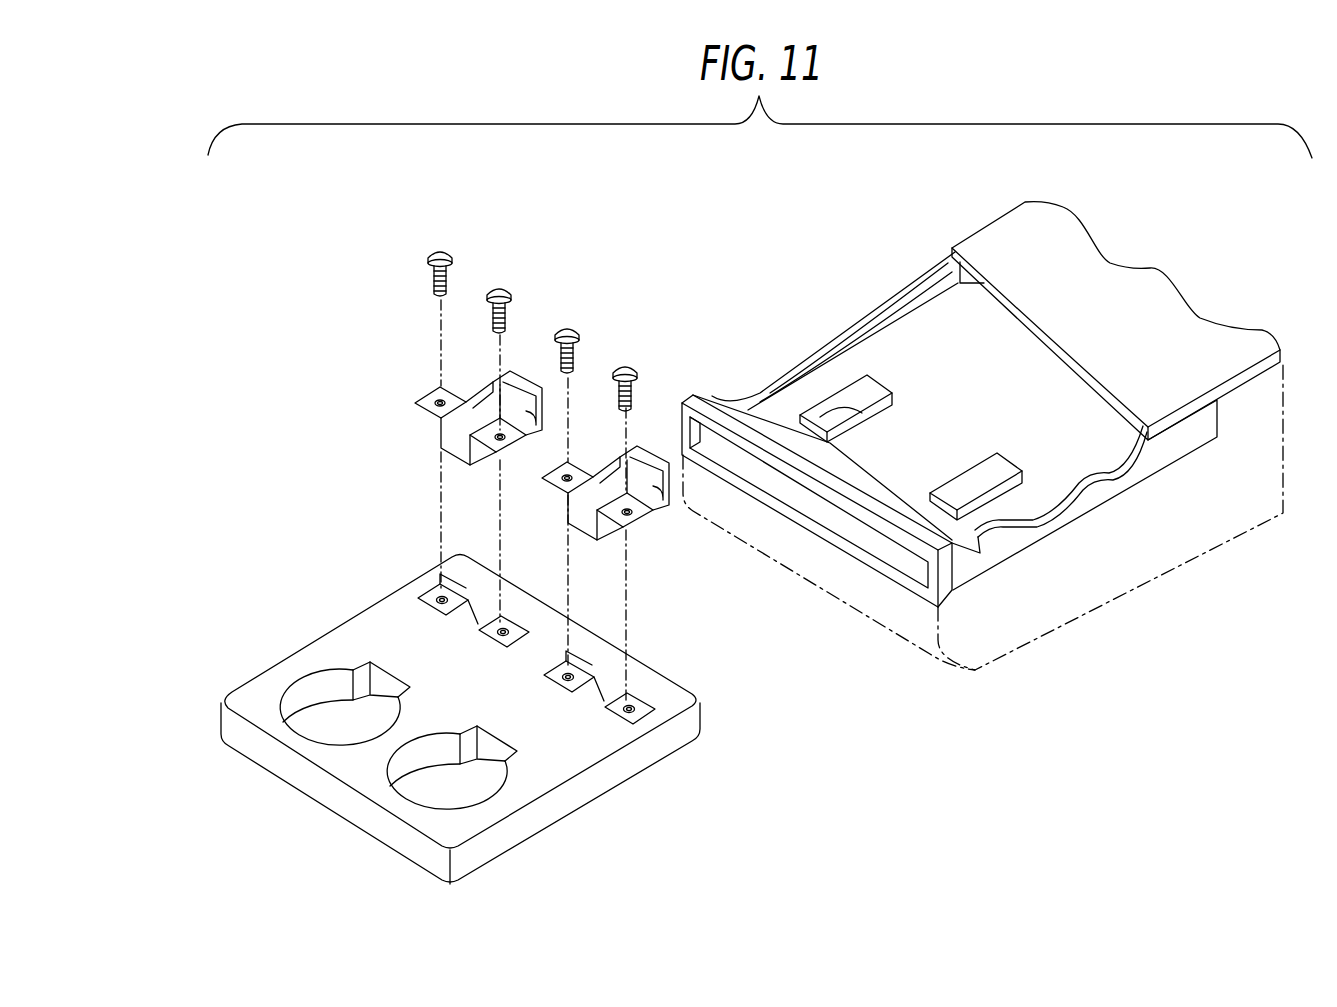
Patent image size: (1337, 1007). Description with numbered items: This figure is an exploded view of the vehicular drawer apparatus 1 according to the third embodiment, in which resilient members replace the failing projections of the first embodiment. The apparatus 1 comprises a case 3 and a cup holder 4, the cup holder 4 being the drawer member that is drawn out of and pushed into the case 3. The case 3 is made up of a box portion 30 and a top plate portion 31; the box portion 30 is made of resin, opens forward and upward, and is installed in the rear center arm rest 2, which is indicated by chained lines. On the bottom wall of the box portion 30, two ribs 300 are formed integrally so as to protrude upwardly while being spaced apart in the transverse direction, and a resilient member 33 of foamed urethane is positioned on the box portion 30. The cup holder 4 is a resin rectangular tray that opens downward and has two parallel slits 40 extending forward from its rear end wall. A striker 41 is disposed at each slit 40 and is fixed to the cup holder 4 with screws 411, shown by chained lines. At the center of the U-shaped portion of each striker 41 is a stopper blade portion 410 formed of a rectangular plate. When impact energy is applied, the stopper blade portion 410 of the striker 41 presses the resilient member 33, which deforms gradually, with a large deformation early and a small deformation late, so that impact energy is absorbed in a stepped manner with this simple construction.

The vehicular drawer apparatus 1 is at (361, 302).
The rear center arm rest 2 is at (1100, 623).
The case 3 is at (857, 260).
The cup holder 4 is at (334, 605).
The box portion 30 is at (1113, 480).
The top plate portion 31 is at (1002, 242).
The resilient member 33 is at (875, 392).
The slit 40 is at (486, 601).
The striker 41 is at (417, 405).
The rib 300 is at (855, 408).
The stopper blade portion 410 is at (520, 383).
The screw 411 is at (452, 272).